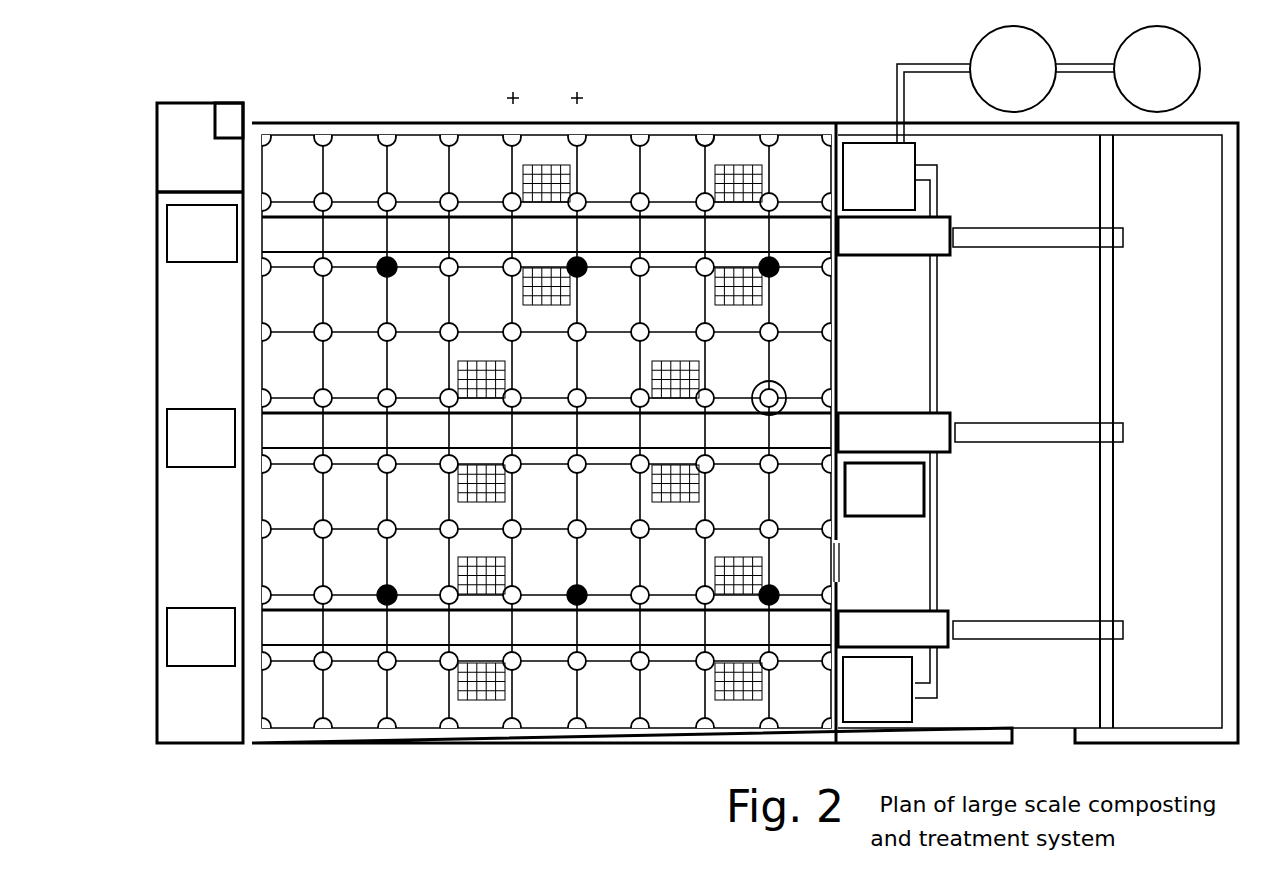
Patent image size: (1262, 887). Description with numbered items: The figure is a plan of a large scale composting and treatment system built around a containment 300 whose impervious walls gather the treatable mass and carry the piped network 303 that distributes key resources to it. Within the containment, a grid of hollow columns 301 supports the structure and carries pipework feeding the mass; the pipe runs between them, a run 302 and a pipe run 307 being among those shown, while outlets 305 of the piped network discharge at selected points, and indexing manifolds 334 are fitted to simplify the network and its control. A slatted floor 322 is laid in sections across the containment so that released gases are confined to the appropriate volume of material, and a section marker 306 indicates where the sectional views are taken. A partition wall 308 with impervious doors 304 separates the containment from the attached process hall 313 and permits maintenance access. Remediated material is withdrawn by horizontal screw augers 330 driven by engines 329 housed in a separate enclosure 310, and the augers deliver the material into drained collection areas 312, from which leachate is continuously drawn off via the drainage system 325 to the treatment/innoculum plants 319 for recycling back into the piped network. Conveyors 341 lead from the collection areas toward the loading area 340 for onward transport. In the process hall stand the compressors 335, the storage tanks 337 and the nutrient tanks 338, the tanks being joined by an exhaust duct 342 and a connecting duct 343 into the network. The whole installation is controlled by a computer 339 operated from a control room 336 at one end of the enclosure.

The containment 300 is at (745, 452).
The hollow columns 301 is at (385, 198).
The longitudinal grid line 302 is at (449, 138).
The piped network 303 is at (668, 200).
The impervious doors 304 is at (860, 564).
The outlets 305 is at (778, 385).
The section line CC 306 is at (545, 87).
The column 307 is at (708, 137).
The partition wall 308 is at (835, 126).
The separate enclosure 310 is at (200, 423).
The collection area 312 is at (894, 432).
The process hall 313 is at (998, 378).
The treatment/innoculum plants 319 is at (879, 432).
The slatted floor 322 is at (609, 446).
The drainage system 325 is at (948, 431).
The engines 329 is at (202, 435).
The screw augers 330 is at (546, 431).
The indexing manifolds 334 is at (380, 274).
The compressors 335 is at (884, 489).
The control room 336 is at (200, 175).
The storage tanks 337 is at (1013, 69).
The nutrient tanks 338 is at (1157, 69).
The computer 339 is at (205, 122).
The loading area 340 is at (1134, 431).
The conveyor 341 is at (1038, 450).
The exhaust duct 342 is at (933, 85).
The connecting duct 343 is at (1085, 50).